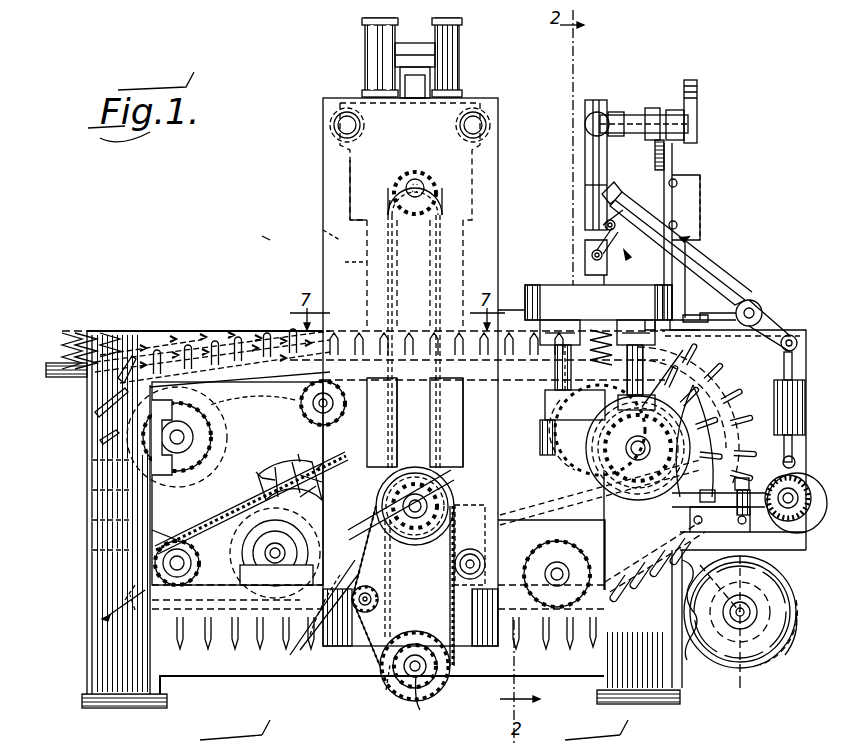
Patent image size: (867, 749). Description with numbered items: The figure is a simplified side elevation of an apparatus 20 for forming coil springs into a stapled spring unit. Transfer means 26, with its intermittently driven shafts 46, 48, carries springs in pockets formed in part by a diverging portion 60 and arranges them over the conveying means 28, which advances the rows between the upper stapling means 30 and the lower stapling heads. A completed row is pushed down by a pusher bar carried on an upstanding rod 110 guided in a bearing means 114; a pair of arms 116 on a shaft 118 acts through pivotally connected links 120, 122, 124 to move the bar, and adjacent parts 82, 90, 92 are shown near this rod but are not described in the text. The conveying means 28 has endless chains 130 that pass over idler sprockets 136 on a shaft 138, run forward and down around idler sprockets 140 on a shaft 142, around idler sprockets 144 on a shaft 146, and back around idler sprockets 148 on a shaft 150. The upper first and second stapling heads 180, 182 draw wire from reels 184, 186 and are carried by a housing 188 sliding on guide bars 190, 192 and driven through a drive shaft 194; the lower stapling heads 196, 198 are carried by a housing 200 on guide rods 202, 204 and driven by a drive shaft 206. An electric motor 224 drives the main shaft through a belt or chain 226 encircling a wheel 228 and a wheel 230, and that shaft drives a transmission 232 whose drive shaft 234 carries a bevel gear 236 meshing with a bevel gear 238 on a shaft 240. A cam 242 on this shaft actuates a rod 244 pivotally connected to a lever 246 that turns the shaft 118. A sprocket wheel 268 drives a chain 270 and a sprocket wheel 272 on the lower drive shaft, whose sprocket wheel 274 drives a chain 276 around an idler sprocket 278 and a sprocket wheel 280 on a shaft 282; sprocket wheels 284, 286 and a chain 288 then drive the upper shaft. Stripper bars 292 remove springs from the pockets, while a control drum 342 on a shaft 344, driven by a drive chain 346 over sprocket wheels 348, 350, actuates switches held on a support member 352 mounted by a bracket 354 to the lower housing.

The apparatus 20 is at (262, 236).
The transfer means 26 is at (692, 228).
The conveying means 28 is at (245, 328).
The upper stapling means 30 is at (365, 245).
The shaft 46 is at (640, 378).
The shaft 48 is at (565, 402).
The diverging portion 60 is at (701, 536).
The shaft 82 is at (620, 115).
The collar 90 is at (690, 118).
The flange 92 is at (697, 87).
The upstanding rod 110 is at (605, 102).
The bearing means 114 is at (605, 198).
The arm 116 is at (716, 314).
The shaft 118 is at (677, 243).
The link 120 is at (608, 260).
The link 122 is at (700, 196).
The link 124 is at (626, 260).
The endless chain 130 is at (213, 676).
The idler sprocket 136 is at (290, 410).
The shaft 138 is at (195, 435).
The idler sprocket 140 is at (175, 457).
The shaft 142 is at (185, 425).
The idler sprocket 144 is at (176, 560).
The shaft 146 is at (273, 553).
The idler sprocket 148 is at (575, 612).
The shaft 150 is at (488, 556).
The first stapling head 180 is at (494, 238).
The second stapling head 182 is at (340, 240).
The reel 184 is at (458, 28).
The reel 186 is at (365, 32).
The housing 188 is at (350, 162).
The guide bar 190 is at (473, 120).
The guide bar 192 is at (347, 112).
The drive shaft 194 is at (415, 188).
The stapling head 196 is at (470, 430).
The stapling head 198 is at (414, 422).
The housing 200 is at (390, 472).
The guide rod 202 is at (480, 568).
The guide rod 204 is at (272, 660).
The drive shaft 206 is at (380, 464).
The electric motor 224 is at (787, 647).
The belt or chain 226 is at (780, 565).
The wheel 228 is at (751, 696).
The wheel 230 is at (716, 383).
The transmission 232 is at (690, 418).
The drive shaft 234 is at (725, 408).
The bevel gear 236 is at (729, 448).
The bevel gear 238 is at (740, 619).
The shaft 240 is at (742, 515).
The cam 242 is at (796, 531).
The rod 244 is at (790, 335).
The lever 246 is at (760, 280).
The sprocket wheel 268 is at (560, 556).
The chain 270 is at (565, 390).
The sprocket wheel 272 is at (570, 485).
The sprocket wheel 274 is at (407, 580).
The chain 276 is at (454, 685).
The idler sprocket 278 is at (358, 630).
The sprocket wheel 280 is at (400, 635).
The shaft 282 is at (420, 710).
The sprocket wheel 284 is at (386, 690).
The sprocket wheel 286 is at (390, 200).
The chain 288 is at (345, 262).
The stripper bar 292 is at (80, 340).
The control drum 342 is at (295, 447).
The shaft 344 is at (228, 567).
The drive chain 346 is at (160, 530).
The sprocket wheel 348 is at (208, 569).
The sprocket wheel 350 is at (195, 525).
The support member 352 is at (275, 486).
The bracket 354 is at (300, 460).